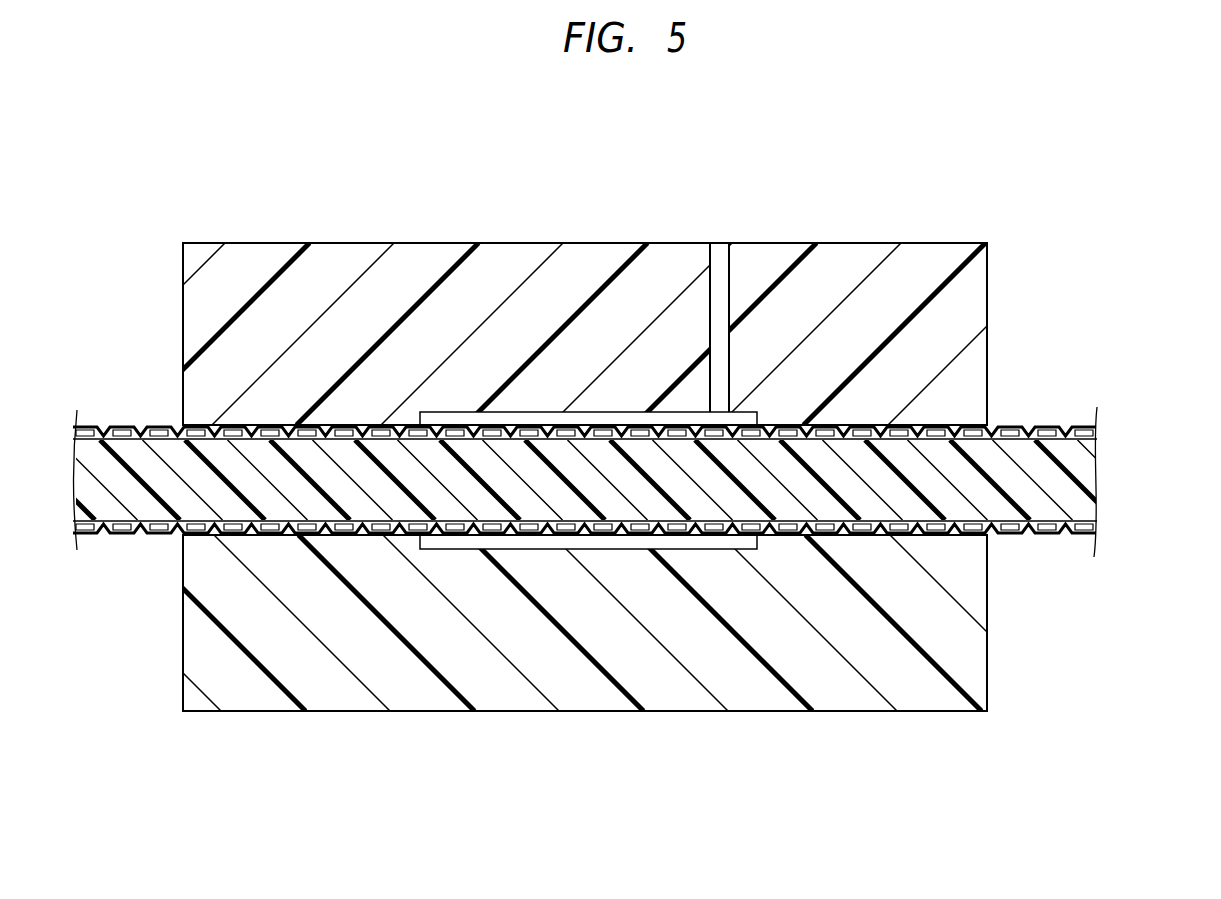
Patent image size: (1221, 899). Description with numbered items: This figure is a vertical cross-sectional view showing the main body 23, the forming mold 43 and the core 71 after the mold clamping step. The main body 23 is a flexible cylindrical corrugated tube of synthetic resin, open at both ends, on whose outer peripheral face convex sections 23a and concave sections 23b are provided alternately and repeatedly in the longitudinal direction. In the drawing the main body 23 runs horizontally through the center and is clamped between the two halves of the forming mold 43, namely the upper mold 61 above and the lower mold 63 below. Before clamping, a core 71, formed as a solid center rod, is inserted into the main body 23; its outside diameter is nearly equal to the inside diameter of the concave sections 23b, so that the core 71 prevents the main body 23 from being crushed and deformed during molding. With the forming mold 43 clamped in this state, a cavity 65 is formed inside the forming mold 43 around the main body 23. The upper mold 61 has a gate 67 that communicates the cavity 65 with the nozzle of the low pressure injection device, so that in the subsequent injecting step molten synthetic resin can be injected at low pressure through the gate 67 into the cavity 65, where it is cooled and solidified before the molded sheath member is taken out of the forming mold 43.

The main body 23 is at (274, 430).
The convex sections 23a is at (679, 540).
The concave sections 23b is at (696, 525).
The forming mold 43 is at (627, 477).
The upper mold 61 is at (973, 318).
The lower mold 63 is at (953, 620).
The cavity 65 is at (590, 543).
The gate 67 is at (727, 288).
The core 71 is at (163, 478).